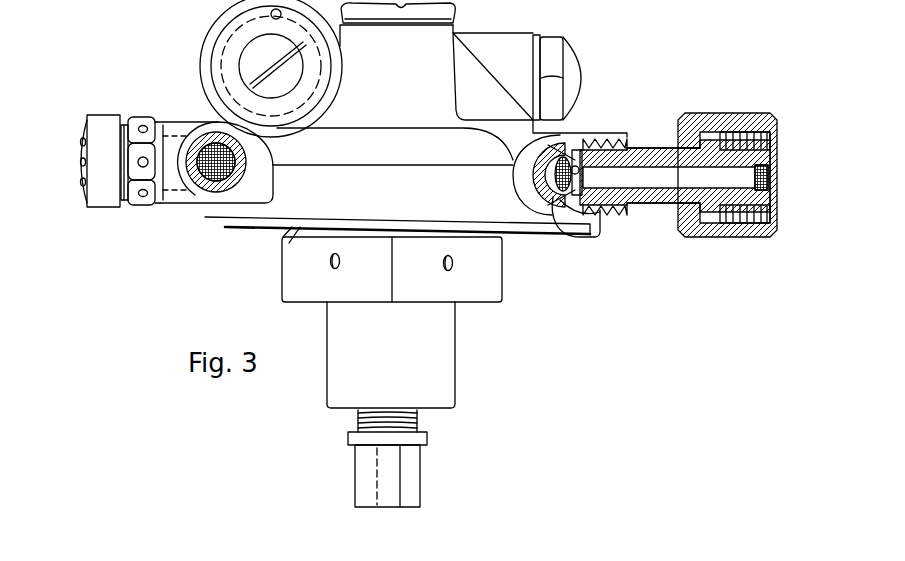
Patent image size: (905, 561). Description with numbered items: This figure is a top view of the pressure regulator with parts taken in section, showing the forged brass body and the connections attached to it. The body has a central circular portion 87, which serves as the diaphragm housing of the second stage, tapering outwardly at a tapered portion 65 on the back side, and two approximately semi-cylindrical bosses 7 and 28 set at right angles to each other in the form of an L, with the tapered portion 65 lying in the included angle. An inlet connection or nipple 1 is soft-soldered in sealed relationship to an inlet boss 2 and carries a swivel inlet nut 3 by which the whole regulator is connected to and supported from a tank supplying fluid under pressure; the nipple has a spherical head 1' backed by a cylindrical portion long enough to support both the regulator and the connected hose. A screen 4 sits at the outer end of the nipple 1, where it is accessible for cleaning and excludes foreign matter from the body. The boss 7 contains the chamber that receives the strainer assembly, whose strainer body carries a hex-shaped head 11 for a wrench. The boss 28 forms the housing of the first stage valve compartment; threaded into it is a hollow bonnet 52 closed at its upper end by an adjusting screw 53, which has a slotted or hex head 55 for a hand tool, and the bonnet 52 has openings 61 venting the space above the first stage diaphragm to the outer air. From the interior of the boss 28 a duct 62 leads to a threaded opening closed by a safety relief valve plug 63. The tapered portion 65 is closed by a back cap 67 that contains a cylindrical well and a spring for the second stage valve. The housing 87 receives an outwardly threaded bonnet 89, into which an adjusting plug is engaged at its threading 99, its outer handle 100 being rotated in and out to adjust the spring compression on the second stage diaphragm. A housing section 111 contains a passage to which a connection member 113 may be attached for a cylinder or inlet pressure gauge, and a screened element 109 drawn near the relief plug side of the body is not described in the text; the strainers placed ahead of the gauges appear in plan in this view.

The inlet connection or nipple 1 is at (663, 148).
The spherical head 1' is at (750, 228).
The inlet boss 2 is at (620, 134).
The swivel inlet nut 3 is at (728, 113).
The screen 4 is at (753, 178).
The semi-cylindrical boss 7 is at (518, 39).
The hex-shaped head 11 is at (567, 53).
The boss (first stage housing) 28 is at (204, 62).
The bonnet 52 is at (224, 86).
The adjusting screw 53 is at (257, 62).
The slotted or hex head 55 is at (300, 70).
The openings 61 is at (270, 15).
The duct 62 is at (250, 147).
The safety relief valve plug 63 is at (103, 188).
The tapered portion 65 is at (433, 70).
The back cap 67 is at (446, 18).
The central circular portion (diaphragm housing) 87 is at (409, 192).
The bonnet 89 is at (340, 320).
The threading 99 is at (417, 420).
The handle 100 is at (413, 478).
The screen boss 109 is at (212, 192).
The housing section 111 is at (593, 217).
The connection member 113 is at (553, 215).